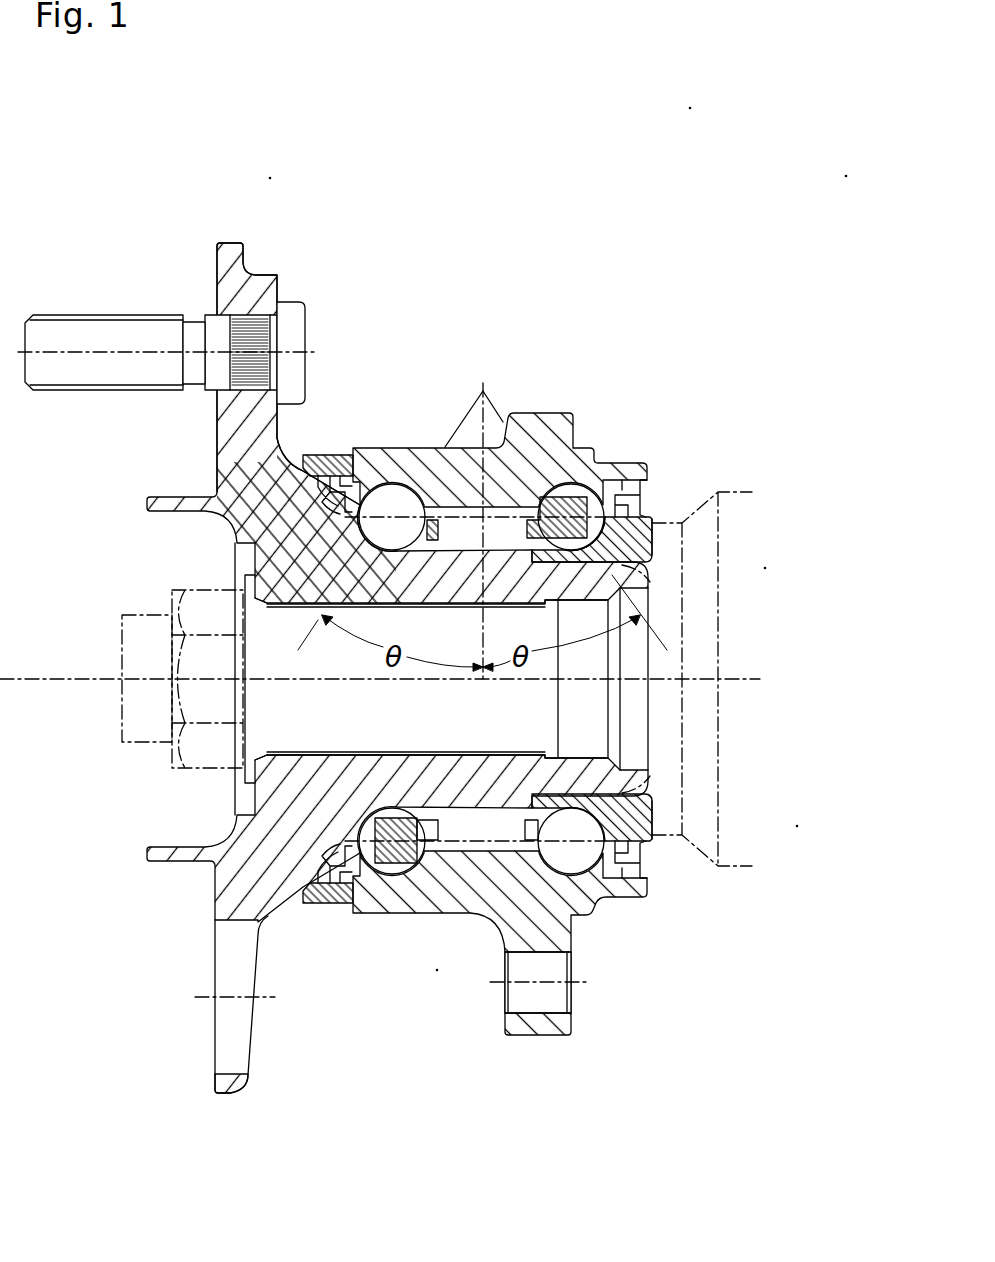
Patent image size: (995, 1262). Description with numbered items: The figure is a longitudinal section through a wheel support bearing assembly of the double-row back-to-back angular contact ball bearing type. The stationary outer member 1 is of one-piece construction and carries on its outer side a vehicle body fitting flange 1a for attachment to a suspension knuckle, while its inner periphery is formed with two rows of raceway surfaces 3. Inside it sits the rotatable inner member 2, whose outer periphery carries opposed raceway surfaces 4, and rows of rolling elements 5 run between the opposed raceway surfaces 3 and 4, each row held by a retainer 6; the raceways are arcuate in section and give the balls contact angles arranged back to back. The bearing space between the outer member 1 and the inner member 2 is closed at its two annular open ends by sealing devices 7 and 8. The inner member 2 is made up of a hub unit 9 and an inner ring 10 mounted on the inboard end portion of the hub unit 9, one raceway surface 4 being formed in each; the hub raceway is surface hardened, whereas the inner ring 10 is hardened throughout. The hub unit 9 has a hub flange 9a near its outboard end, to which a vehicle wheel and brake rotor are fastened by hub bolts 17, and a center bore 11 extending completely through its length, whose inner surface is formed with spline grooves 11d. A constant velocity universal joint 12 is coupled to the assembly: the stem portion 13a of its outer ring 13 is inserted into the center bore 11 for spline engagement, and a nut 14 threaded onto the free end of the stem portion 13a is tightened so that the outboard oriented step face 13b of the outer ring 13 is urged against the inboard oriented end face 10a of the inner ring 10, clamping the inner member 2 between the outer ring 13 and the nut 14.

The outer member 1 is at (500, 687).
The vehicle body fitting flange 1a is at (548, 1037).
The inner member 2 is at (62, 518).
The raceway surfaces 3 is at (400, 500).
The raceway surfaces 4 is at (300, 512).
The rolling elements 5 is at (383, 495).
The retainer 6 is at (560, 497).
The sealing device 7 is at (336, 456).
The sealing device 8 is at (646, 492).
The hub unit 9 is at (359, 629).
The hub flange 9a is at (226, 243).
The inner ring 10 is at (440, 679).
The inboard oriented end face 10a is at (652, 543).
The center bore 11 is at (265, 735).
The spline grooves 11d is at (400, 757).
The constant velocity universal joint 12 is at (416, 616).
The outer ring 13 is at (717, 492).
The stem portion 13a is at (137, 715).
The step face 13b is at (655, 565).
The nut 14 is at (190, 663).
The hub bolts 17 is at (125, 316).